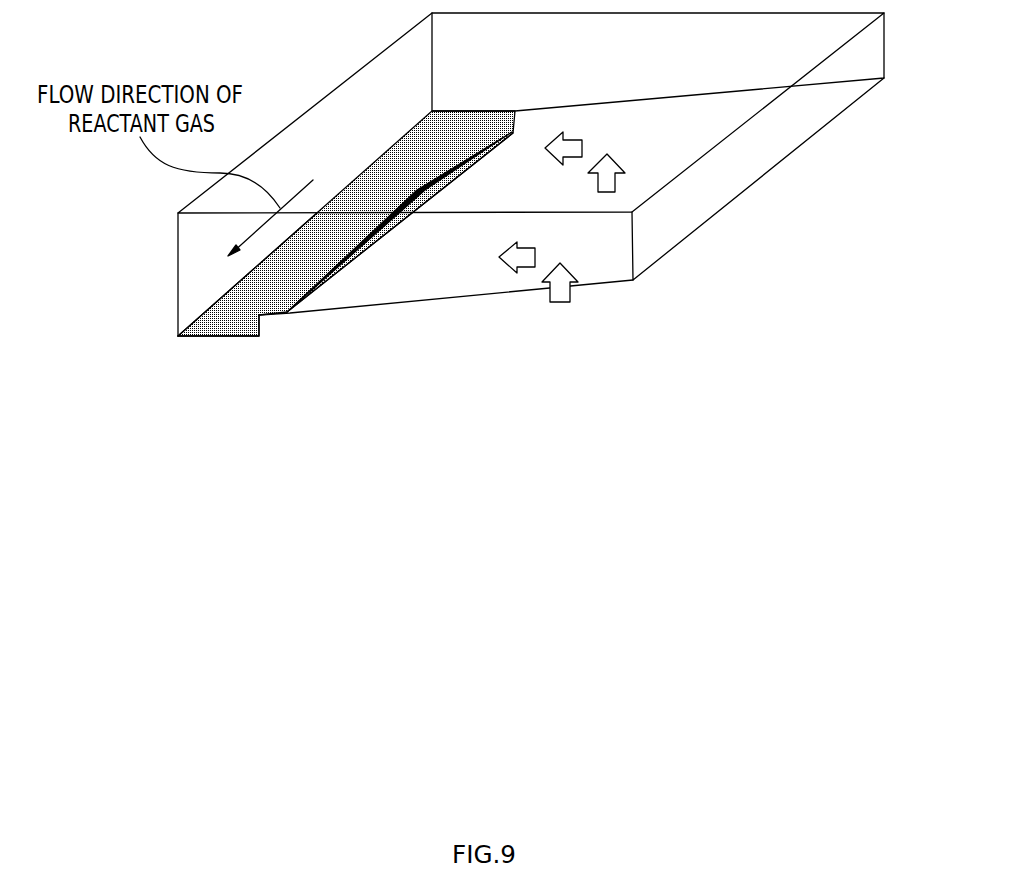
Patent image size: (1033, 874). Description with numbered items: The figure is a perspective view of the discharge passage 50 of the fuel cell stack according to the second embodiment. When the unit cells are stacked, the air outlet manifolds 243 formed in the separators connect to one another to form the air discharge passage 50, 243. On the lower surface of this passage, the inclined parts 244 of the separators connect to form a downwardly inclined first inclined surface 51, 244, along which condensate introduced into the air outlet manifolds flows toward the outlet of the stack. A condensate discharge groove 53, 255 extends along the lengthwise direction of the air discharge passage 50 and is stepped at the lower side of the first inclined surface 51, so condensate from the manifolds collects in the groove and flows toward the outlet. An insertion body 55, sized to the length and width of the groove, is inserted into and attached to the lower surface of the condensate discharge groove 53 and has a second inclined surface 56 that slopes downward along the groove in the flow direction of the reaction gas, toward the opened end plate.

The discharge passage 50 is at (531, 215).
The air outlet manifold 243 is at (466, 248).
The first inclined surface 51 is at (405, 305).
The inclined part 244 is at (442, 299).
The condensate discharge groove 53 is at (247, 314).
The reactant gas channel 255 is at (224, 326).
The insertion body 55 is at (373, 197).
The second inclined surface 56 is at (420, 153).